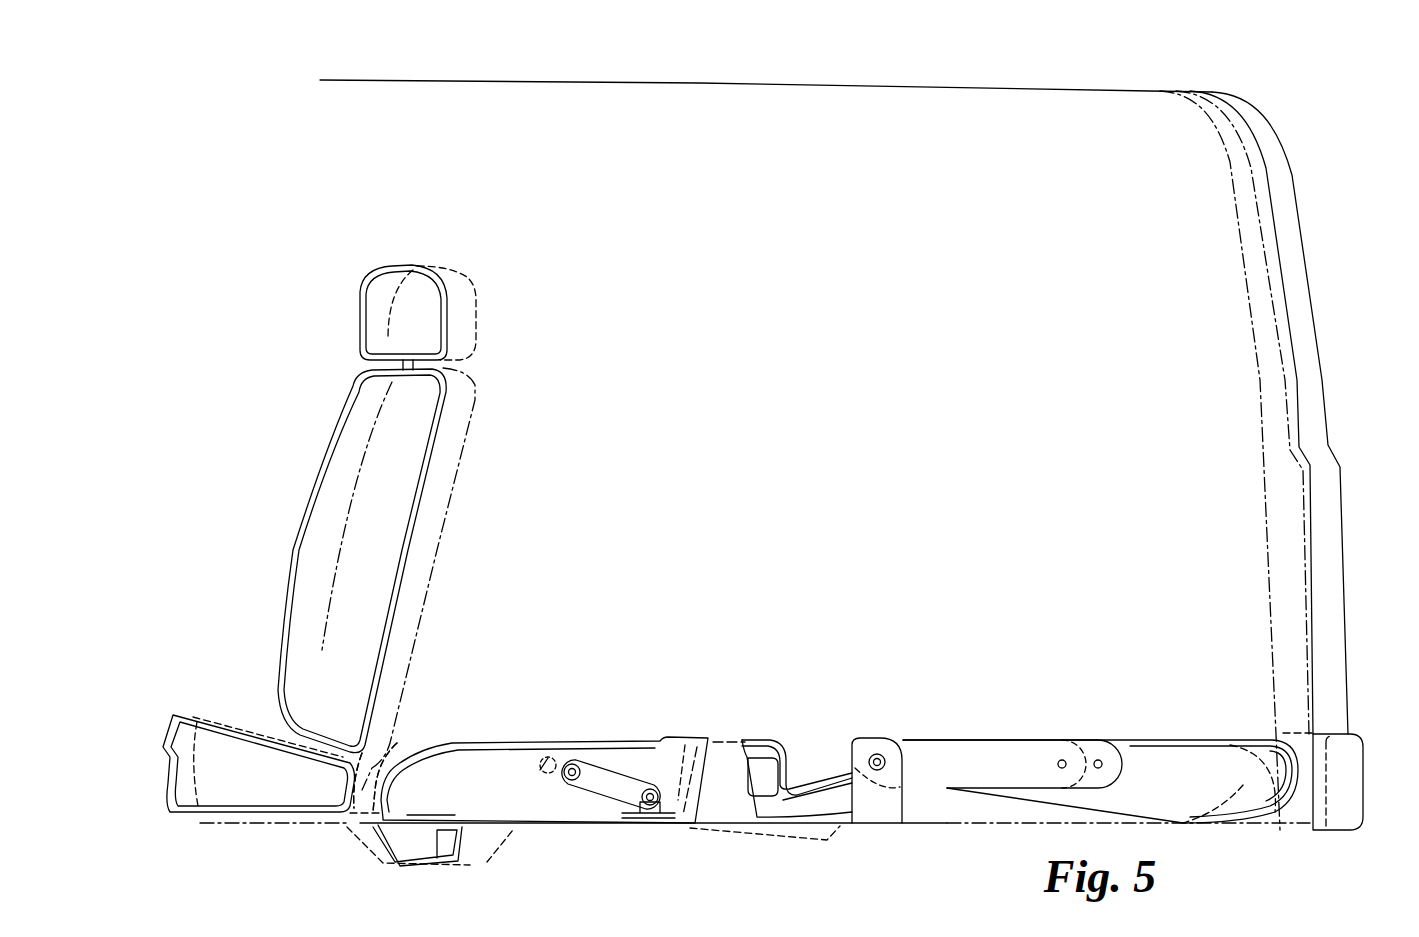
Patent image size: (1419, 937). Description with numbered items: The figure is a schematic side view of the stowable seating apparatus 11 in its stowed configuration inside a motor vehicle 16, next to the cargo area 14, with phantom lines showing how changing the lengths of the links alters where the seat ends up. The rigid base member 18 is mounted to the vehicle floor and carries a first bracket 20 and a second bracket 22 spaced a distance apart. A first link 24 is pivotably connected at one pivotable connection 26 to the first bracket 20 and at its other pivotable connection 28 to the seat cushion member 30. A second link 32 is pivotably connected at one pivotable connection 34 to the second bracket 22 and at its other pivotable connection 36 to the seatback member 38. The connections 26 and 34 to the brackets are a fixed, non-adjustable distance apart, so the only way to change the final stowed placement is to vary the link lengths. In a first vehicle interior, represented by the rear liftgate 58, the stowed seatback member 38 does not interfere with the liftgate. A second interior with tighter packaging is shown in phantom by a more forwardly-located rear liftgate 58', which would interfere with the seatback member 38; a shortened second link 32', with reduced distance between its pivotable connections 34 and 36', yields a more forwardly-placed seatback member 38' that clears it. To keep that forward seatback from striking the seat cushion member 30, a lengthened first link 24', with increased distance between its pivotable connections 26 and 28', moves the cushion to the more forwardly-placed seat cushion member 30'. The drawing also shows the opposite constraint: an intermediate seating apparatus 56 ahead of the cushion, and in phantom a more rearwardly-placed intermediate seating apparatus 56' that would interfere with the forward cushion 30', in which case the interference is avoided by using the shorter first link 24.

The stowable seating apparatus 11 is at (754, 600).
The cargo area 14 is at (1005, 537).
The motor vehicle 16 is at (415, 70).
The rigid base member 18 is at (930, 828).
The first bracket 20 is at (624, 808).
The second bracket 22 is at (873, 807).
The first link 24 is at (611, 740).
The lengthened first link 24' is at (573, 725).
The pivotable connection 26 is at (675, 817).
The pivotable connection 28 is at (581, 720).
The pivotable connection 28' is at (535, 722).
The seat cushion member 30 is at (544, 747).
The more forwardly-placed seat cushion member 30' is at (401, 742).
The second link 32 is at (1012, 717).
The shortened second link 32' is at (1031, 717).
The pivotable connection 34 is at (876, 755).
The pivotable connection 36 is at (1121, 707).
The pivotable connection 36' is at (1048, 707).
The seatback member 38 is at (1100, 734).
The more forwardly-placed seatback member 38' is at (1229, 816).
The intermediate seating apparatus 56 is at (348, 509).
The more rearwardly-placed intermediate seating apparatus 56' is at (466, 539).
The rear liftgate 58 is at (1300, 460).
The more forwardly-located rear liftgate 58' is at (1263, 460).